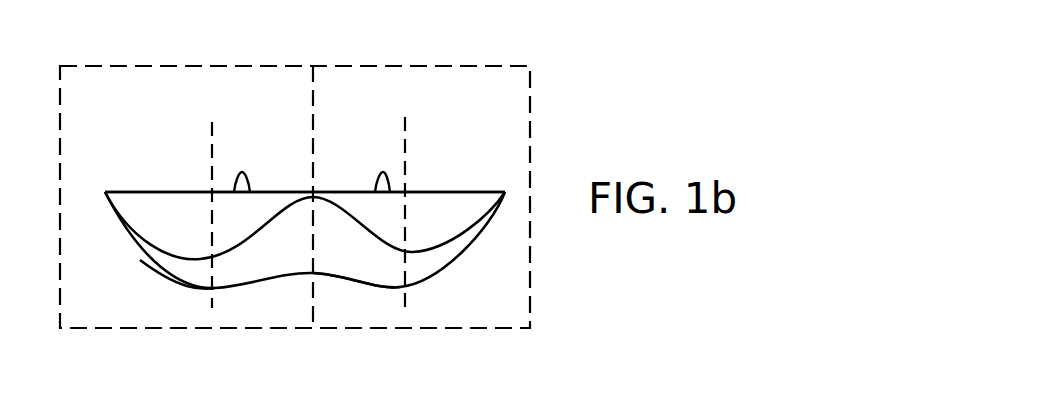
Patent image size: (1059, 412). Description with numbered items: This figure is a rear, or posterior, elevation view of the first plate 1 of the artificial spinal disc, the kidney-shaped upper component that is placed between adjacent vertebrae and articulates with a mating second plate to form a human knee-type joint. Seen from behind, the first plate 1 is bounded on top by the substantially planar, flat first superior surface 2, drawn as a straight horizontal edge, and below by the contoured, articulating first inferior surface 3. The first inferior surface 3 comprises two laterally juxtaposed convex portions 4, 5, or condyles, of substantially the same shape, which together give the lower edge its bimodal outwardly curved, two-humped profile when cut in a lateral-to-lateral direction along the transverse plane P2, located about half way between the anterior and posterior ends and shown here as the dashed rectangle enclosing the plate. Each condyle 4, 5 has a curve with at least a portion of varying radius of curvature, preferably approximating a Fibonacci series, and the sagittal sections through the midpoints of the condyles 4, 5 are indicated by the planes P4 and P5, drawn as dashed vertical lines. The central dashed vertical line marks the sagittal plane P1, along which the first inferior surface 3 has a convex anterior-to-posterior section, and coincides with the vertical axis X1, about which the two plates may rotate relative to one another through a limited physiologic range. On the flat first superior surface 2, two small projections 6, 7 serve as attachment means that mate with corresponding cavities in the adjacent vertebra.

The first plate 1 is at (170, 295).
The first superior surface 2 is at (155, 192).
The first inferior surface 3 is at (357, 253).
The convex portion (condyle) 4 is at (198, 290).
The convex portion (condyle) 5 is at (397, 288).
The projection 6 is at (246, 173).
The projection 7 is at (377, 173).
The sagittal plane P1 is at (316, 97).
The vertical axis X1 is at (387, 88).
The transverse plane P2 is at (106, 105).
The condyle midpoint sagittal plane P4 is at (209, 212).
The condyle midpoint sagittal plane P5 is at (407, 210).